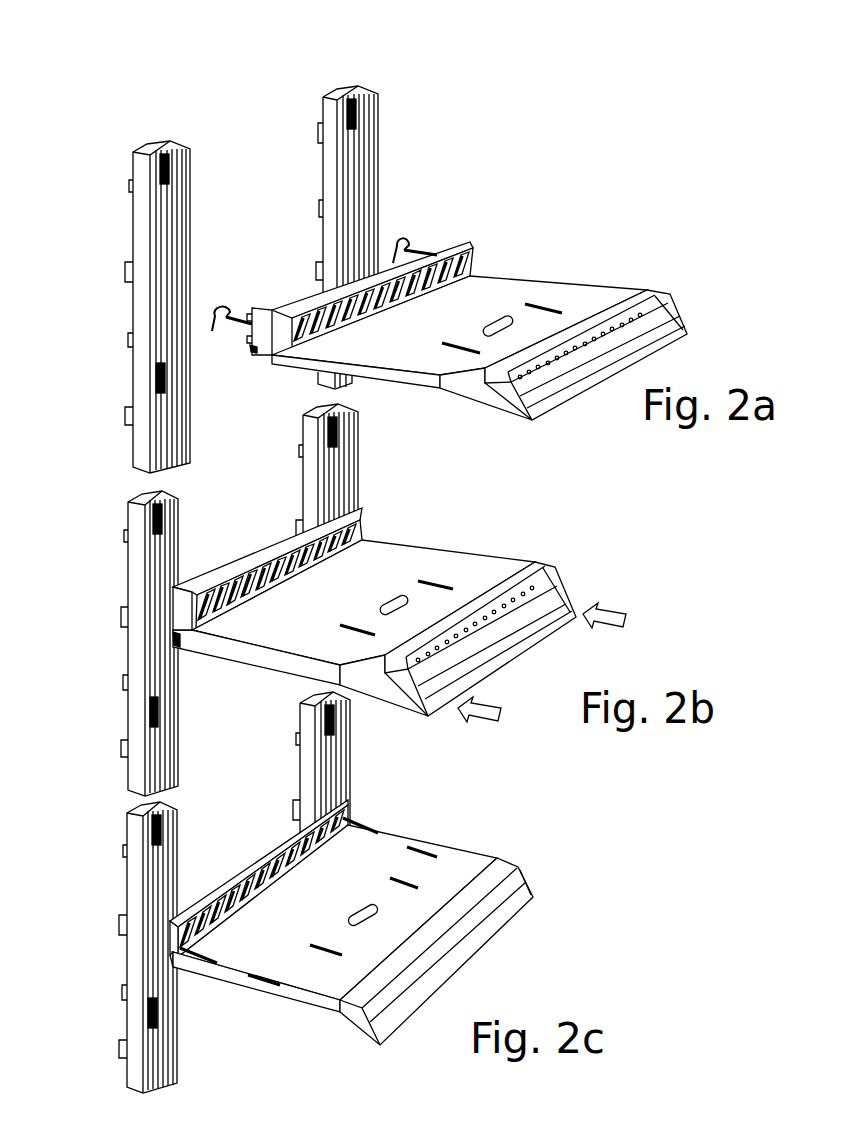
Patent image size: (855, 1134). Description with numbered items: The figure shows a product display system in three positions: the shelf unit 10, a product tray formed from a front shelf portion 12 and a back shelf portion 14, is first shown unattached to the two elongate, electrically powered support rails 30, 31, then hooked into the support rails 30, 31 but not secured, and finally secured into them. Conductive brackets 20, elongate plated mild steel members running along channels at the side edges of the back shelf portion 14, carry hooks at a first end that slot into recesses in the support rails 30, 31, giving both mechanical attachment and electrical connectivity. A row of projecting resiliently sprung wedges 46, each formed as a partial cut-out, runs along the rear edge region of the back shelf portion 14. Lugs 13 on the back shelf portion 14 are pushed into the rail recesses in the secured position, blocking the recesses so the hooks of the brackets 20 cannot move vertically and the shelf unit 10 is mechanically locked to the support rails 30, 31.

In FIG. 2A, the shelf unit 10 is at (467, 343).
In FIG. 2B, the shelf unit 10 is at (374, 638).
In FIG. 2C, the shelf unit 10 is at (351, 949).
In FIG. 2A, the front shelf portion 12 is at (495, 395).
In FIG. 2B, the front shelf portion 12 is at (405, 702).
In FIG. 2C, the front shelf portion 12 is at (353, 1020).
In FIG. 2A, the lugs 13 is at (268, 310).
In FIG. 2B, the lugs 13 is at (183, 585).
In FIG. 2A, the back shelf portion 14 is at (393, 378).
In FIG. 2B, the back shelf portion 14 is at (223, 648).
In FIG. 2C, the back shelf portion 14 is at (223, 977).
In FIG. 2A, the conductive bracket 20 is at (255, 348).
In FIG. 2B, the conductive bracket 20 is at (180, 655).
In FIG. 2A, the support rail 30 is at (133, 165).
In FIG. 2B, the support rail 30 is at (128, 575).
In FIG. 2C, the support rail 30 is at (127, 887).
In FIG. 2A, the support rail 31 is at (357, 90).
In FIG. 2B, the support rail 31 is at (307, 442).
In FIG. 2C, the support rail 31 is at (303, 792).
In FIG. 2A, the projecting resiliently sprung wedges 46 is at (472, 258).
In FIG. 2B, the projecting resiliently sprung wedges 46 is at (367, 542).
In FIG. 2C, the projecting resiliently sprung wedges 46 is at (345, 822).